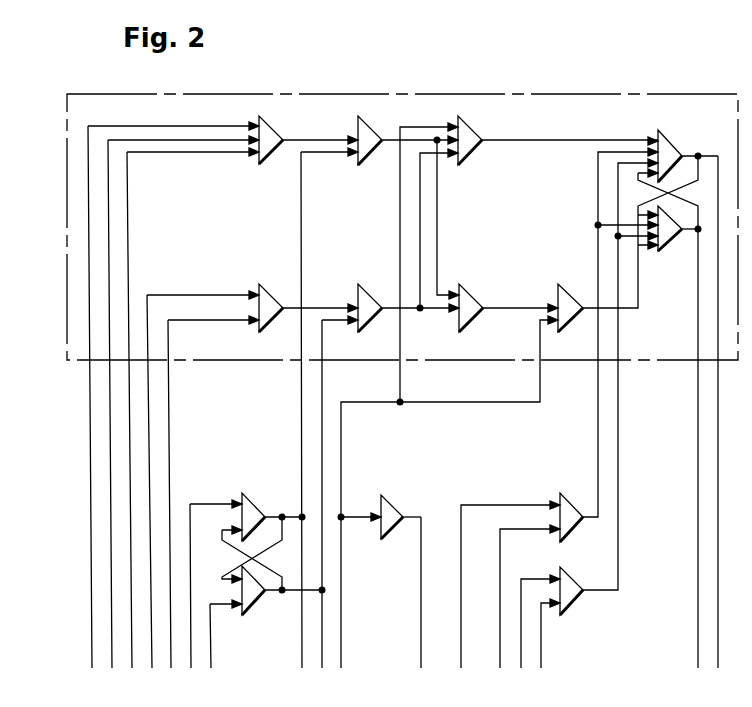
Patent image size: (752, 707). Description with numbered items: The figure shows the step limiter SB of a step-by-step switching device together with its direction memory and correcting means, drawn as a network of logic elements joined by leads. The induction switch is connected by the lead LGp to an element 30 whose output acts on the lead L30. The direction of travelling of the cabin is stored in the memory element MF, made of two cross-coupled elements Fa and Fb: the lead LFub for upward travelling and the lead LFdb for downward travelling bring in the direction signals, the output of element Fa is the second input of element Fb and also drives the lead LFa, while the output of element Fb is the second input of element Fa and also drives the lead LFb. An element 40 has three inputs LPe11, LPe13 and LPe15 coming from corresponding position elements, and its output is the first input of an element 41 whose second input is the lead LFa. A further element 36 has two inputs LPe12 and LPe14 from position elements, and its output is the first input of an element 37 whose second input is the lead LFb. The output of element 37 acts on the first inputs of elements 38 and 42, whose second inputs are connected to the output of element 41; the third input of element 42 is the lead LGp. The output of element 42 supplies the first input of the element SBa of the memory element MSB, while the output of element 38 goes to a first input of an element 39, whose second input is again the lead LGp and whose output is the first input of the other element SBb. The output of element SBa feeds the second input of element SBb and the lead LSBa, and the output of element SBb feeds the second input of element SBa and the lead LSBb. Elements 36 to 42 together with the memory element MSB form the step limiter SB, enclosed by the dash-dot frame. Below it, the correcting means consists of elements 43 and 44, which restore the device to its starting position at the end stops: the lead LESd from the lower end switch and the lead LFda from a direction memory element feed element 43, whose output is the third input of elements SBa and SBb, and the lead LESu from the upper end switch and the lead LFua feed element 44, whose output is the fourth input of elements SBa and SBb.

The element 30 is at (394, 505).
The element 36 is at (272, 298).
The element 37 is at (371, 298).
The element 38 is at (472, 298).
The element 39 is at (578, 288).
The element 40 is at (274, 137).
The element 41 is at (371, 137).
The element 42 is at (472, 137).
The element 43 is at (573, 505).
The element 44 is at (575, 585).
The step limiter SB is at (402, 240).
The element of memory element MSB SBa is at (672, 145).
The element of memory element MSB SBb is at (672, 240).
The memory element MSB is at (677, 192).
The memory element MF is at (257, 553).
The element Fa is at (255, 505).
The element Fb is at (255, 599).
The lead LPe11 is at (165, 397).
The lead LPe13 is at (175, 404).
The lead LPe15 is at (185, 410).
The lead LPe12 is at (195, 481).
The lead LPe14 is at (205, 494).
The lead LFub is at (206, 586).
The lead LFdb is at (216, 636).
The lead LFa is at (320, 410).
The lead LFb is at (330, 494).
The lead LGp is at (439, 397).
The lead L30 is at (411, 592).
The lead LFda is at (500, 586).
The lead LESd is at (520, 598).
The lead LFua is at (530, 623).
The lead LESu is at (540, 635).
The lead LSBb is at (688, 448).
The lead LSBa is at (708, 412).